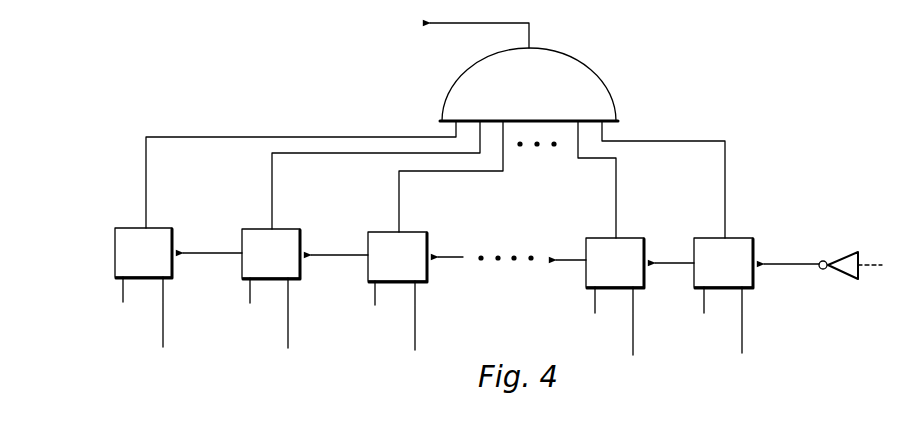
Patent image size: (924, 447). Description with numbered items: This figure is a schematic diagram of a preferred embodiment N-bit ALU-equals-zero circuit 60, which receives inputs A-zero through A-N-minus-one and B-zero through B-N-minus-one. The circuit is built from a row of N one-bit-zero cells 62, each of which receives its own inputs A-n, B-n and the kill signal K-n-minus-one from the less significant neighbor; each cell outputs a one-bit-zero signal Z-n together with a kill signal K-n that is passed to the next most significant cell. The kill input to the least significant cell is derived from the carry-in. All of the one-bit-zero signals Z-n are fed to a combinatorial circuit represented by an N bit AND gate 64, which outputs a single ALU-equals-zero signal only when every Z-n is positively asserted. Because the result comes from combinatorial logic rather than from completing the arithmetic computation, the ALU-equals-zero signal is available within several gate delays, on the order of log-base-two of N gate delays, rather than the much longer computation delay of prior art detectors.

The ALU=0 circuit 60 is at (232, 97).
The one-bit-zero cell 62 is at (125, 268).
The N bit AND gate 64 is at (508, 115).